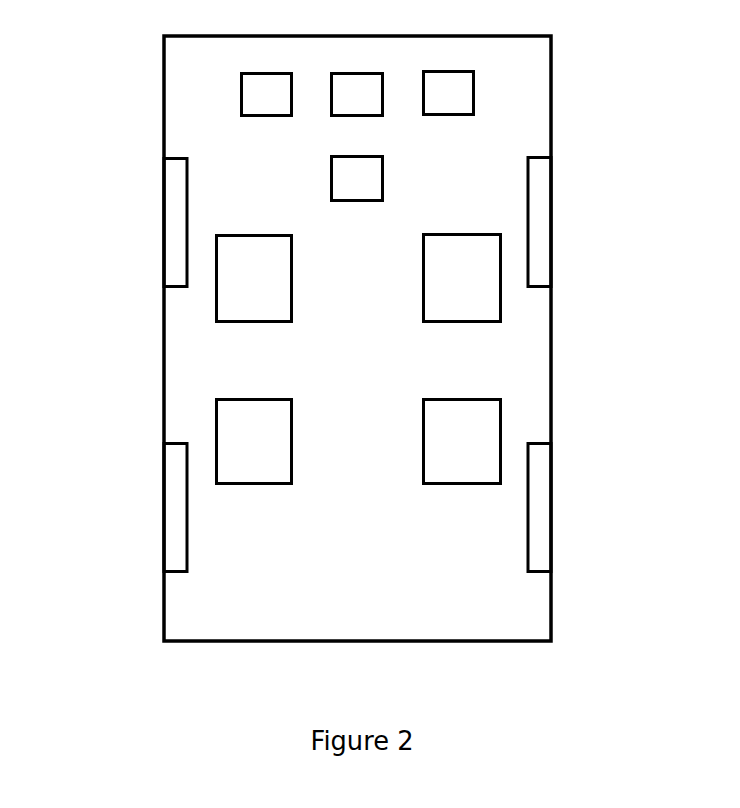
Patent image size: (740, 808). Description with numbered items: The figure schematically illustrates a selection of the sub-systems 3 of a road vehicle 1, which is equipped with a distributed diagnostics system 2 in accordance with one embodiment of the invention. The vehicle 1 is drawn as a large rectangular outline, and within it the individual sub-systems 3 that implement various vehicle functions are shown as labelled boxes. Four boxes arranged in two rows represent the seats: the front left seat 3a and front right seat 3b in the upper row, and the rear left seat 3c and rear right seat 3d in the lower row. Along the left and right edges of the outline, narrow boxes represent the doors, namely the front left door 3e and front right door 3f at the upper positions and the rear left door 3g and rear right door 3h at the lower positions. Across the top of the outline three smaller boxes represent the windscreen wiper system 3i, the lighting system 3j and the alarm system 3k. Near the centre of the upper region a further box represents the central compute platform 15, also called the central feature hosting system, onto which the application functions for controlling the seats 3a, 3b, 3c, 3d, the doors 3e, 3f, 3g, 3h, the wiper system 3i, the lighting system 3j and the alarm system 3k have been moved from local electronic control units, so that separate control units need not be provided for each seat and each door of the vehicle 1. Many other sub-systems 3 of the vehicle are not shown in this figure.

The road vehicle 1 is at (162, 63).
The distributed diagnostics system 2 is at (448, 158).
The sub-systems 3 is at (148, 147).
The front left seat 3a is at (254, 279).
The front right seat 3b is at (462, 278).
The rear left seat 3c is at (254, 442).
The rear right seat 3d is at (462, 442).
The front left door 3e is at (162, 205).
The front right door 3f is at (553, 212).
The rear left door 3g is at (162, 499).
The rear right door 3h is at (553, 490).
The windscreen wiper system 3i is at (267, 95).
The lighting system 3j is at (357, 95).
The alarm system 3k is at (449, 93).
The central compute platform 15 is at (357, 179).